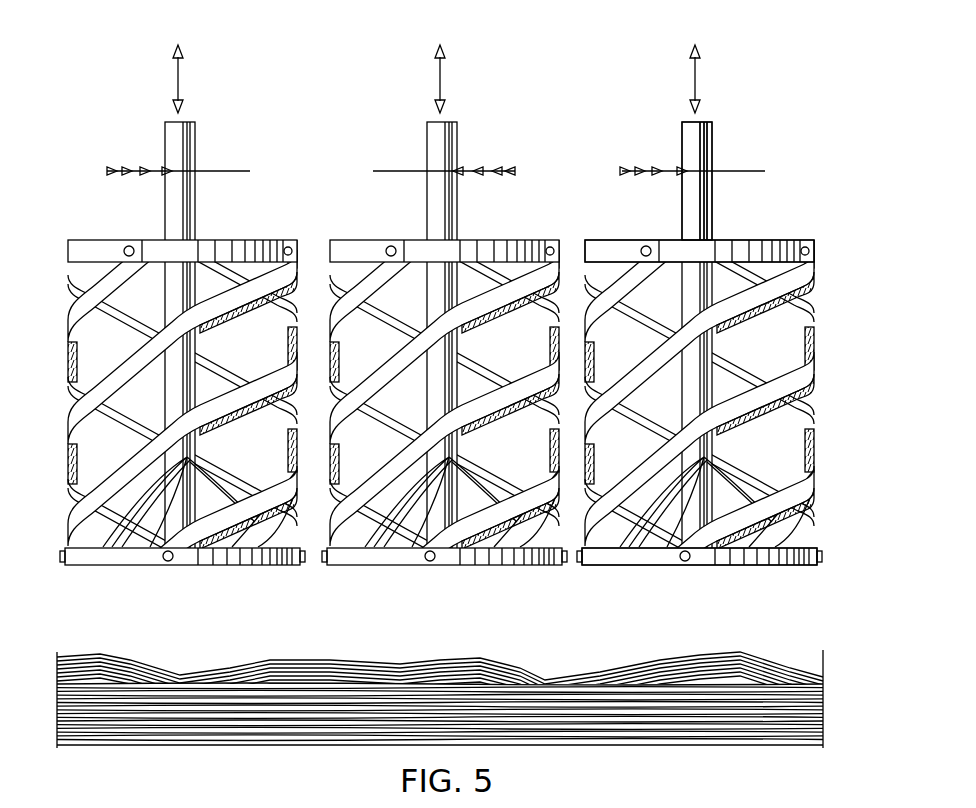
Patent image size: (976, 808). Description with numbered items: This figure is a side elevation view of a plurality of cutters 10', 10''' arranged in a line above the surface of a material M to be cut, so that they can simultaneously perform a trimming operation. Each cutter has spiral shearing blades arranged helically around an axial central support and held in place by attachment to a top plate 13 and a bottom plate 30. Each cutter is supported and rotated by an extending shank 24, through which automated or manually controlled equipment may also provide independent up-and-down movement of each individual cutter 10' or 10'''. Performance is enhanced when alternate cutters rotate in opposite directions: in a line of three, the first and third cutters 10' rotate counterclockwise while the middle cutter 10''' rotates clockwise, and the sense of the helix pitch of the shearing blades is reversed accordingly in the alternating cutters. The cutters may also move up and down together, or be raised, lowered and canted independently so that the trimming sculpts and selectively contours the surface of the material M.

The cutter 10' is at (441, 352).
The cutter 10''' is at (444, 352).
The shank 24 is at (692, 222).
The top plate 13 is at (741, 241).
The bottom plate 30 is at (601, 565).
The material M is at (100, 657).